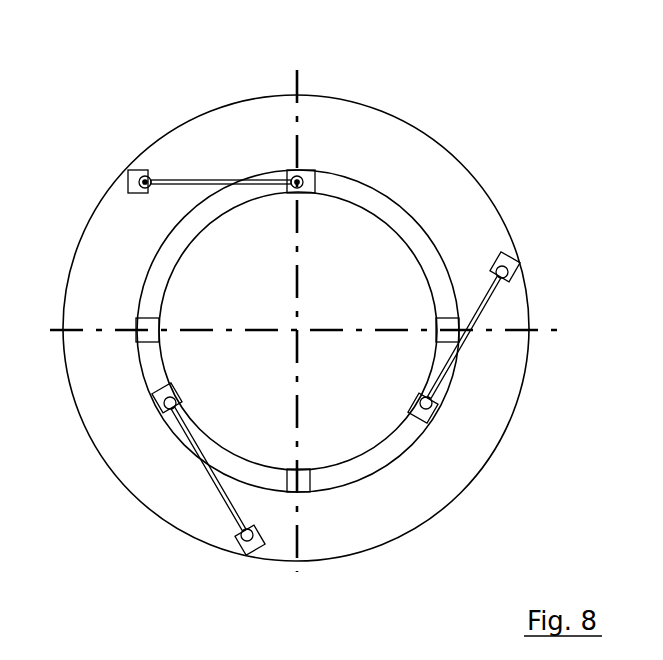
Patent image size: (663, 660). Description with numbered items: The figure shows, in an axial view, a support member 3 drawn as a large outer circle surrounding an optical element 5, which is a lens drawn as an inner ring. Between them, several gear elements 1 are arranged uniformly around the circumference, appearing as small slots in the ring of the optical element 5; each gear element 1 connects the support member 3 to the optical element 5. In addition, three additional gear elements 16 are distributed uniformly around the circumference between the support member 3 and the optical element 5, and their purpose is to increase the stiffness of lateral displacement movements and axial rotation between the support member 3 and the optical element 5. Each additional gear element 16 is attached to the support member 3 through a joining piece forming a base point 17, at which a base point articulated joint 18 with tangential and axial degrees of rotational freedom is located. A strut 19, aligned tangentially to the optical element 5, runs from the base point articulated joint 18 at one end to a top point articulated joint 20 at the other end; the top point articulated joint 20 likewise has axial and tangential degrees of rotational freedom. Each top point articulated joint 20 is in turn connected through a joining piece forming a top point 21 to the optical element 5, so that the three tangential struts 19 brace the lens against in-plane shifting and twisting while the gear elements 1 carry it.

The gear element 1 is at (440, 328).
The support member 3 is at (453, 220).
The optical element 5 is at (362, 423).
The additional gear element 16 is at (315, 318).
The base point 17 is at (133, 183).
The base point articulated joint 18 is at (138, 175).
The strut 19 is at (210, 180).
The top point articulated joint 20 is at (300, 178).
The top point 21 is at (313, 174).